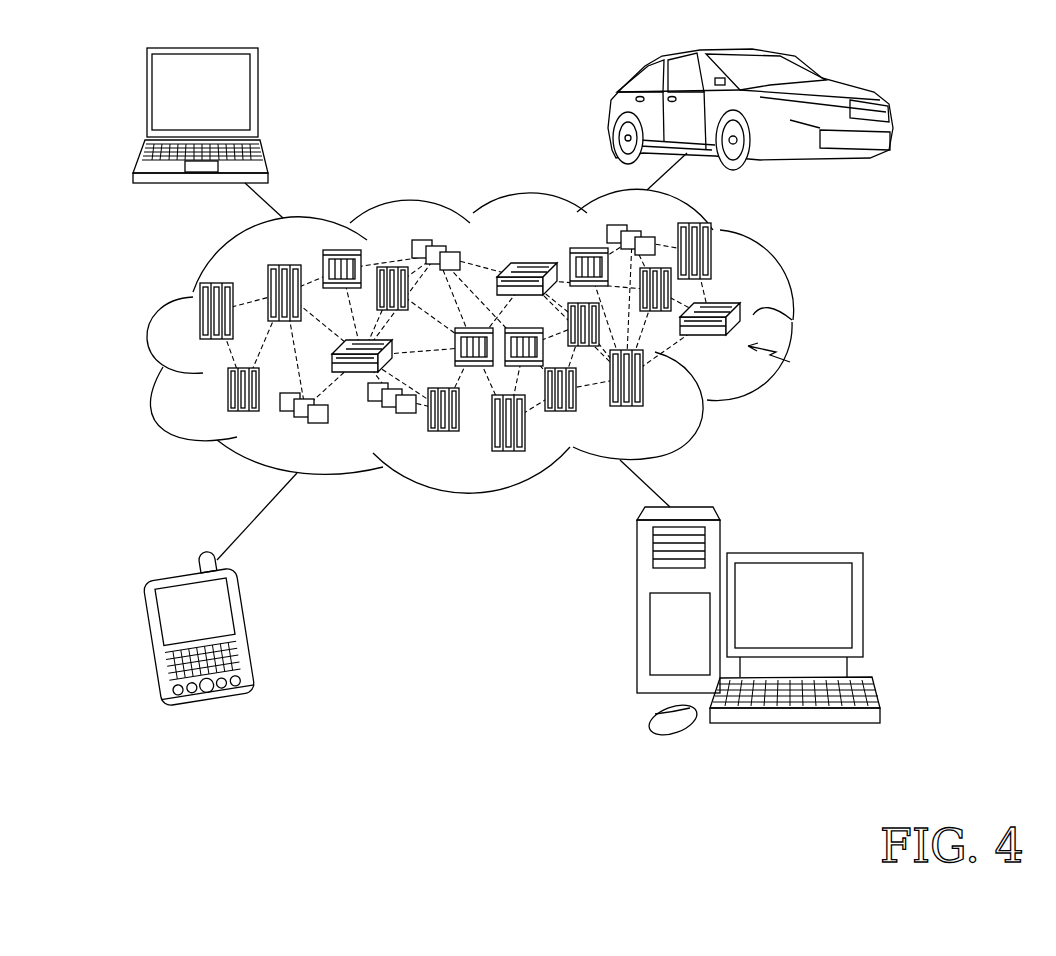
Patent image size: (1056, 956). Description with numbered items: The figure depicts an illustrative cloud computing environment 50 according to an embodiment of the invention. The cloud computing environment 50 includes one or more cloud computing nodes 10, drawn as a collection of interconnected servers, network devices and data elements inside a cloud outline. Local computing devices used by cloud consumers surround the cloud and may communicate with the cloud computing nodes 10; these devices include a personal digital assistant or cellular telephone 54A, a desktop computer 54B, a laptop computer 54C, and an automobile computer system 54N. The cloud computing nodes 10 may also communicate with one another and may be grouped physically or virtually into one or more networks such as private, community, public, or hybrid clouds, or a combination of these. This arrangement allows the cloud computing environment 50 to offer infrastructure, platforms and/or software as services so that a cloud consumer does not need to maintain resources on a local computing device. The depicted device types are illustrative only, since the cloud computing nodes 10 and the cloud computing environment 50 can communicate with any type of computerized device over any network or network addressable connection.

The cloud computing nodes 10 is at (783, 364).
The cloud computing environment 50 is at (792, 320).
The personal digital assistant or cellular telephone 54A is at (248, 633).
The desktop computer 54B is at (790, 553).
The laptop computer 54C is at (258, 100).
The automobile computer system 54N is at (610, 112).